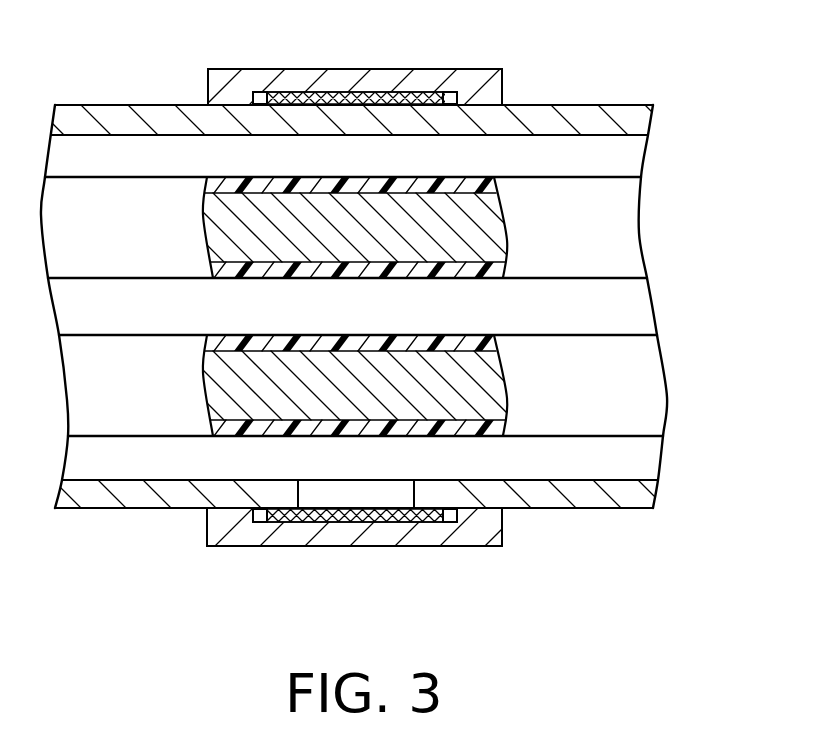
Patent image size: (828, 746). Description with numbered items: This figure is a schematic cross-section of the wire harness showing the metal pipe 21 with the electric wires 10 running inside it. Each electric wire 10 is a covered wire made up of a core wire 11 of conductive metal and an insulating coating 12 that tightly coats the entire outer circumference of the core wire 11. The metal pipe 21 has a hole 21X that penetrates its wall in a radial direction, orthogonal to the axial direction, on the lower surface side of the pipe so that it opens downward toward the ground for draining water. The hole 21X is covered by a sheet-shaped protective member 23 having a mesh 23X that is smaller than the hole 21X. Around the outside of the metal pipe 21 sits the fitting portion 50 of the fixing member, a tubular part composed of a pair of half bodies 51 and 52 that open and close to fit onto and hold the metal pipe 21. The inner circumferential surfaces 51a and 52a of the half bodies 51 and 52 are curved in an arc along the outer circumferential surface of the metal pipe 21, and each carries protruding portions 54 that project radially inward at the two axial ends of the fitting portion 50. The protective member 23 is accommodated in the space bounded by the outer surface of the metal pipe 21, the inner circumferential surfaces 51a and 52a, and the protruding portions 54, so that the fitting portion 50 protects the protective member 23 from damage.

The electric wire 10 is at (638, 236).
The core wire 11 is at (212, 228).
The insulating coating 12 is at (207, 184).
The metal pipe 21 is at (652, 111).
The hole 21X is at (300, 493).
The protective member 23 is at (452, 92).
The mesh 23X is at (388, 92).
The fitting portion 50 is at (476, 68).
The half body 51 is at (307, 539).
The inner circumferential surface 51a is at (390, 516).
The half body 52 is at (240, 74).
The inner circumferential surface 52a is at (322, 92).
The protruding portion 54 is at (207, 511).